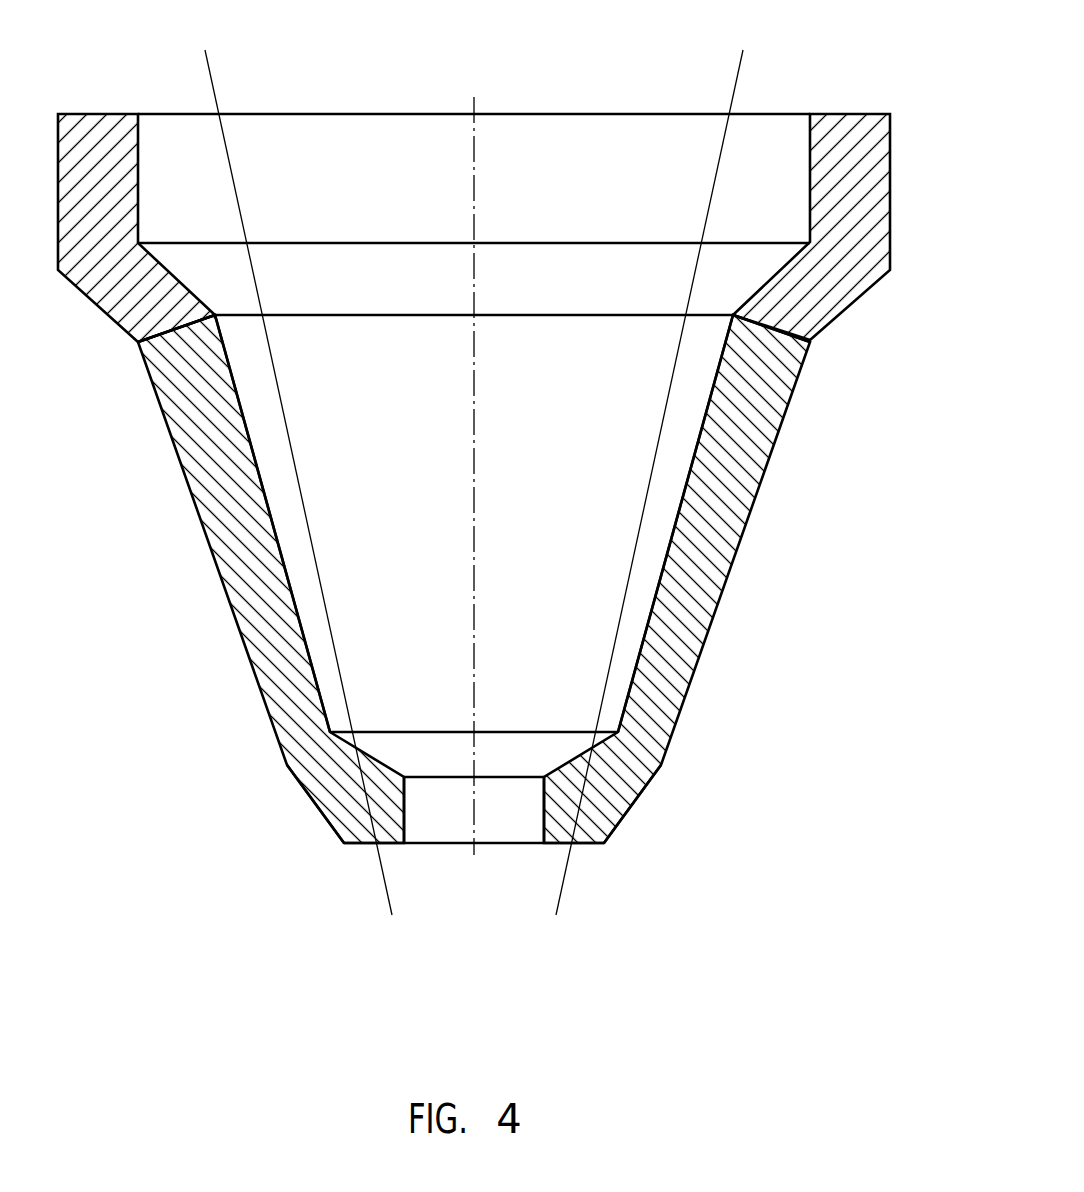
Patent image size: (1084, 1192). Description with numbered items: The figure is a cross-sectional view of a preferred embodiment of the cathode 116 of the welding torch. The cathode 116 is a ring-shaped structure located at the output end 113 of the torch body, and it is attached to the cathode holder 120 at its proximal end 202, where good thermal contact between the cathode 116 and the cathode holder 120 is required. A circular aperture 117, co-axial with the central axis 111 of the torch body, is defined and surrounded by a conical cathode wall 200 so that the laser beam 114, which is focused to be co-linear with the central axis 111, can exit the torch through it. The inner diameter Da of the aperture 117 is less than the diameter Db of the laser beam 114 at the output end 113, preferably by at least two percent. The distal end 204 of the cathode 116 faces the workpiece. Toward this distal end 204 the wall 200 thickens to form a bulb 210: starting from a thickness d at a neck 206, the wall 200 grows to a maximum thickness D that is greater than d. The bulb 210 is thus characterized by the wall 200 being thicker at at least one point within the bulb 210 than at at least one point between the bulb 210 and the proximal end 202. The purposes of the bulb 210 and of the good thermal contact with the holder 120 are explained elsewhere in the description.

The central axis 111 is at (473, 164).
The output end 113 is at (505, 248).
The laser beam 114 is at (678, 173).
The cathode 116 is at (533, 645).
The aperture 117 is at (432, 805).
The cathode holder 120 is at (840, 197).
The cathode wall 200 is at (750, 463).
The proximal end 202 is at (772, 330).
The distal end 204 is at (574, 846).
The neck 206 is at (652, 703).
The bulb 210 is at (323, 792).
The wall thickness at neck d is at (607, 690).
The maximum wall thickness D is at (543, 777).
The inner diameter of aperture Da is at (404, 850).
The laser beam diameter Db is at (573, 848).